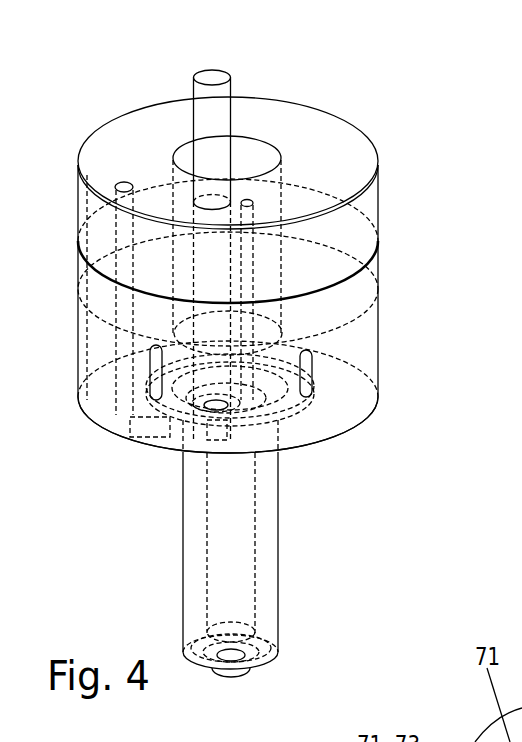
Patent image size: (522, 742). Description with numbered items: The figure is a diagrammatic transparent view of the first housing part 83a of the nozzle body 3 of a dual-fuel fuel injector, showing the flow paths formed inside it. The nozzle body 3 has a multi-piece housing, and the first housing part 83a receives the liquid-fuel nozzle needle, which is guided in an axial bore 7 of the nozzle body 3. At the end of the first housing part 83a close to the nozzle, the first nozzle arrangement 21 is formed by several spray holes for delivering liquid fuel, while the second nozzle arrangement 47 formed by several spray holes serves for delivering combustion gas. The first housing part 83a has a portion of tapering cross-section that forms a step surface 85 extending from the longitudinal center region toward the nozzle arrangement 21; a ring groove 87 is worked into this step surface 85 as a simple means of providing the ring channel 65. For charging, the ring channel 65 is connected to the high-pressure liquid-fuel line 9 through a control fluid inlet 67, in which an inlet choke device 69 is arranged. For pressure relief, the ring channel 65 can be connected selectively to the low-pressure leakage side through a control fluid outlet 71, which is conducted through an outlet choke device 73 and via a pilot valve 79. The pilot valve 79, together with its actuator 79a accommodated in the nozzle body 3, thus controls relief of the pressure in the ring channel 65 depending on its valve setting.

The nozzle body 3 is at (389, 323).
The axial bore 7 is at (255, 547).
The high-pressure liquid-fuel line 9 is at (253, 205).
The first nozzle arrangement 21 is at (288, 636).
The second nozzle arrangement 47 is at (262, 648).
The ring channel 65 is at (297, 415).
The control fluid inlet 67 is at (306, 386).
The inlet choke device 69 is at (290, 390).
The control fluid outlet 71 is at (122, 183).
The outlet choke device 73 is at (178, 417).
The pilot valve 79 is at (219, 406).
The actuator of the second pilot valve 79a is at (218, 122).
The first housing part 83a is at (348, 400).
The step surface 85 is at (327, 443).
The ring groove 87 is at (303, 410).